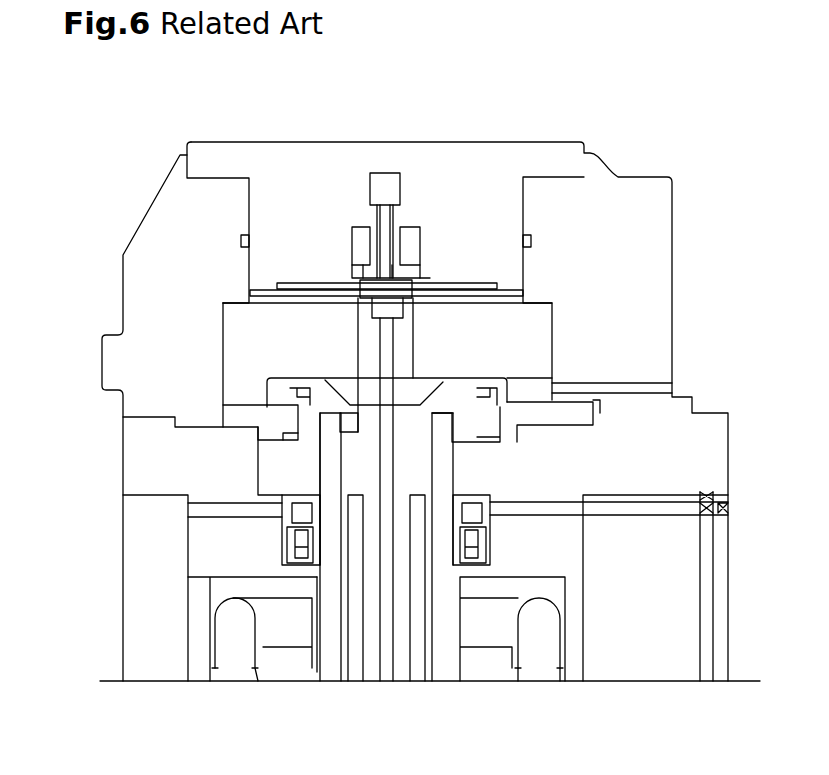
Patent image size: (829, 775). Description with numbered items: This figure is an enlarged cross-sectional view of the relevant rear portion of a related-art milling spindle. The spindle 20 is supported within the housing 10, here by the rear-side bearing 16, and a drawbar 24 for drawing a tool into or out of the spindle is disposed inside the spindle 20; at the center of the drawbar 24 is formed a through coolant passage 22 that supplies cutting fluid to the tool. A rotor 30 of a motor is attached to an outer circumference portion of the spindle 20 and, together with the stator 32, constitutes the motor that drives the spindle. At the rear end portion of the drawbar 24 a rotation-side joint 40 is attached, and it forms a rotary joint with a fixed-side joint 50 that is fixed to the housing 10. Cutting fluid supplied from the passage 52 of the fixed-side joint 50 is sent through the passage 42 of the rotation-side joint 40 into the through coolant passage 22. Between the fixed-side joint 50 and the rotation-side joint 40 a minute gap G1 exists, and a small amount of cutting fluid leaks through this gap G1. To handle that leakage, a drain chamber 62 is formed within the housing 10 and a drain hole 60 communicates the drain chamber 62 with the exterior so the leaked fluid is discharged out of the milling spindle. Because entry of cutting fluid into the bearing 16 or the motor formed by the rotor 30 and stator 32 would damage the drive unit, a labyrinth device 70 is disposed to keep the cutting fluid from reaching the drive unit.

The housing 10 is at (135, 618).
The rear-side bearing 16 is at (287, 543).
The spindle 20 is at (323, 668).
The through coolant passage 22 is at (387, 670).
The drawbar 24 is at (400, 670).
The rotor 30 is at (485, 665).
The stator 32 is at (540, 663).
The rotation-side joint 40 is at (490, 287).
The passage of the rotation-side joint 42 is at (385, 297).
The fixed-side joint 50 is at (408, 247).
The passage of the fixed-side joint 52 is at (385, 230).
The drain hole 60 is at (647, 388).
The drain chamber 62 is at (505, 335).
The labyrinth device 70 is at (268, 398).
The minute gap G1 is at (422, 278).